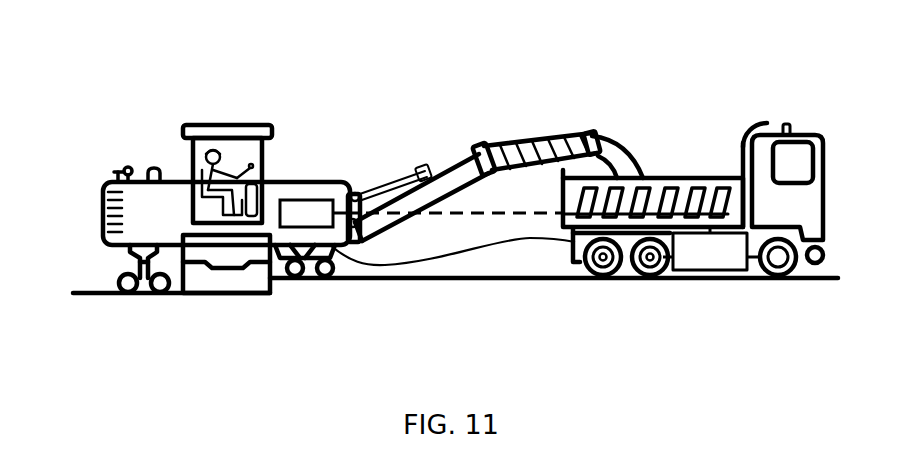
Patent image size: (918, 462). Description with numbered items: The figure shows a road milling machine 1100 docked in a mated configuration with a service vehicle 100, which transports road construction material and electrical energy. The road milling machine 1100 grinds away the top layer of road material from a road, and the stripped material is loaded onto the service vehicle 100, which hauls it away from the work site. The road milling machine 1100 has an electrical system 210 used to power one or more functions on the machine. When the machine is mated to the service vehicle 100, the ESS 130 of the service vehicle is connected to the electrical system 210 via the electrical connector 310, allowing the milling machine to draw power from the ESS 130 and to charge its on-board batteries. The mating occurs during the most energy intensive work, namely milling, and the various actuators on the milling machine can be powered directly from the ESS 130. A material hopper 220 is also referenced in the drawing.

The road milling machine 1100 is at (106, 82).
The service vehicle 100 is at (678, 176).
The electrical system 210 is at (312, 213).
The material hopper 220 is at (455, 199).
The ESS 130 is at (710, 248).
The electrical connector 310 is at (503, 243).